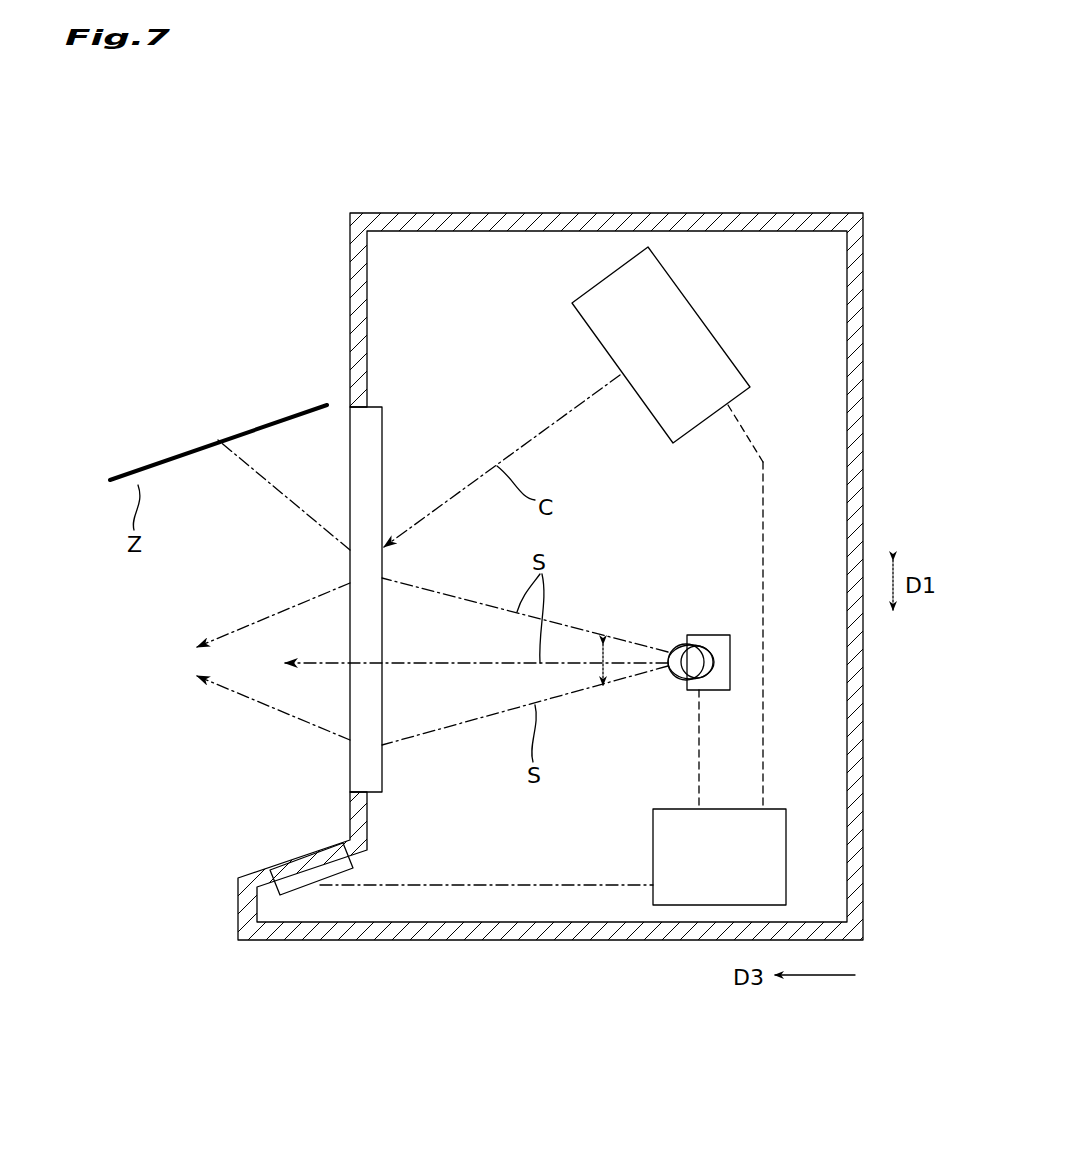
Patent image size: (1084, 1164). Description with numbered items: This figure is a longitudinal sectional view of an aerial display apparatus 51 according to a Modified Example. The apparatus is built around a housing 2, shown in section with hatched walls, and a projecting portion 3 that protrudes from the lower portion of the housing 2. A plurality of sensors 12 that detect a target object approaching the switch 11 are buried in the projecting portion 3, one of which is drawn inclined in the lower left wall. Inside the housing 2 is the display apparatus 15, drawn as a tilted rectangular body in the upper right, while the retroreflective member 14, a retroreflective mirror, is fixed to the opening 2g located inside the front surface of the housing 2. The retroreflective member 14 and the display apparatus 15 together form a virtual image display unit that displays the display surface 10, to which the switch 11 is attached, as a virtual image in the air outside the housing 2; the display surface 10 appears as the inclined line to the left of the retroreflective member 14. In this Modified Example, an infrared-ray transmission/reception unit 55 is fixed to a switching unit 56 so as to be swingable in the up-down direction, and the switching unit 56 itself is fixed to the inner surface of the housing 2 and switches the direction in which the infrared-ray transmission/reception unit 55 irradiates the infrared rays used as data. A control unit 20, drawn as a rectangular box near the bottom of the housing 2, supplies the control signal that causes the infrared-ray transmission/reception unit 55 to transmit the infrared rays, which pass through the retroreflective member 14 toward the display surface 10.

The housing 2 is at (540, 210).
The aerial display apparatus 51 is at (655, 158).
The projecting portion 3 is at (238, 905).
The retroreflective member 14 is at (382, 768).
The opening 2g is at (360, 410).
The display apparatus 15 is at (727, 353).
The infrared-ray transmission/reception unit 55 is at (683, 645).
The switching unit 56 is at (715, 635).
The control unit 20 is at (695, 897).
The sensor 12 is at (303, 862).
The display surface 10 is at (286, 410).
The switch 11 is at (218, 438).